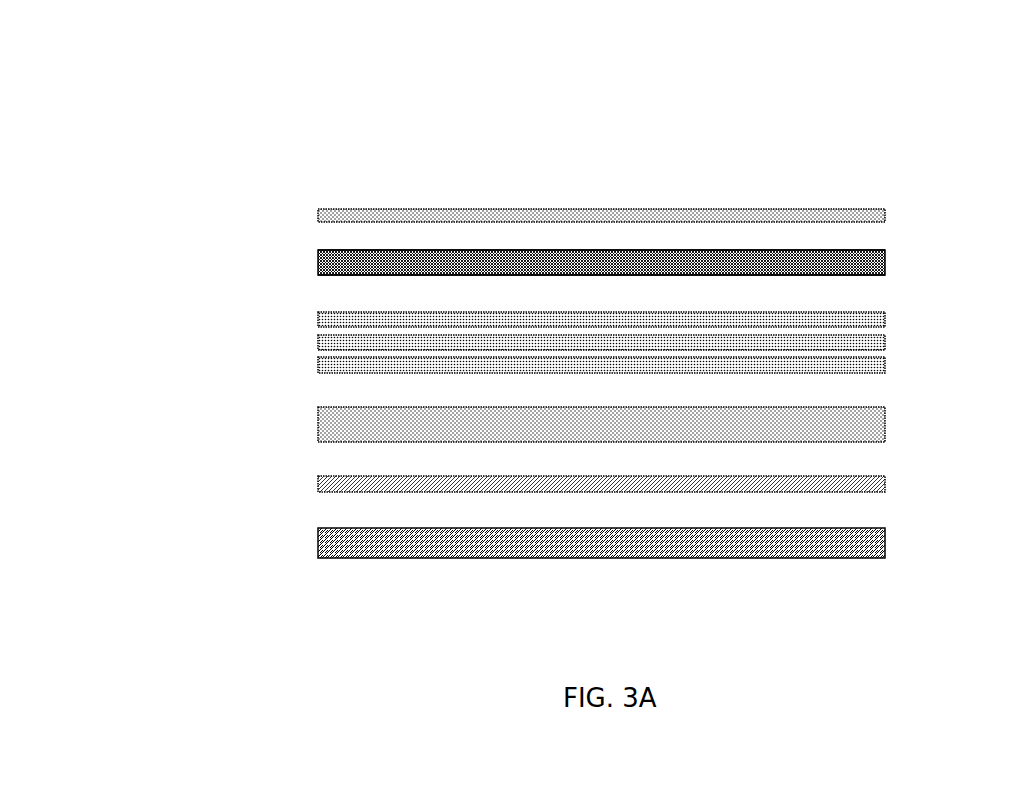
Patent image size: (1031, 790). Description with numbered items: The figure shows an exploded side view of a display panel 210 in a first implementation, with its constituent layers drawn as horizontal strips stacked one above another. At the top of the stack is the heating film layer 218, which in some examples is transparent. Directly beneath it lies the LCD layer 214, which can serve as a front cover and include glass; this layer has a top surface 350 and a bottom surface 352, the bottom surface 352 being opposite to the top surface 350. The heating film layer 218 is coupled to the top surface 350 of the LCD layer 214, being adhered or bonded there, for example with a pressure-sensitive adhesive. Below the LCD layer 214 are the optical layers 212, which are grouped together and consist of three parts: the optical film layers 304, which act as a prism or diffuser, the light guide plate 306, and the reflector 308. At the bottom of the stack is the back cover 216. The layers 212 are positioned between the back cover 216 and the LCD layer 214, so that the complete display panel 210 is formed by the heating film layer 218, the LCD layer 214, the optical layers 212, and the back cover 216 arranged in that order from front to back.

The display panel 210 is at (170, 77).
The heating film layer 218 is at (318, 214).
The LCD layer 214 is at (318, 262).
The top surface 350 is at (858, 253).
The bottom surface 352 is at (853, 277).
The layers 212 is at (606, 402).
The optical film layers 304 is at (300, 304).
The light guide plate 306 is at (318, 437).
The reflector 308 is at (318, 490).
The back cover 216 is at (318, 552).